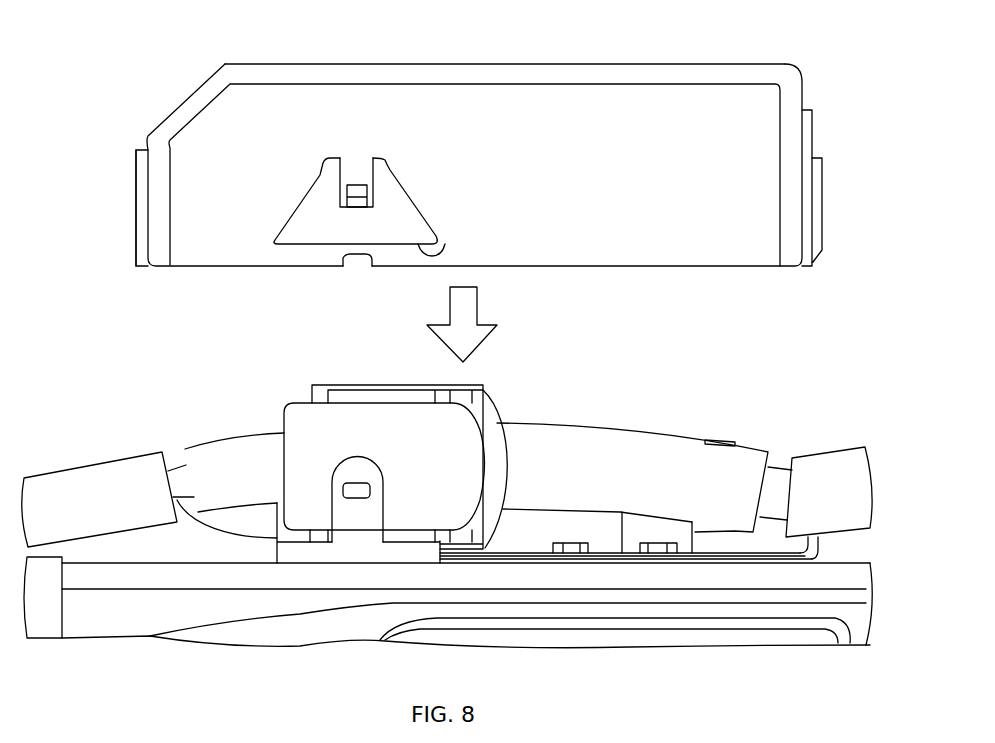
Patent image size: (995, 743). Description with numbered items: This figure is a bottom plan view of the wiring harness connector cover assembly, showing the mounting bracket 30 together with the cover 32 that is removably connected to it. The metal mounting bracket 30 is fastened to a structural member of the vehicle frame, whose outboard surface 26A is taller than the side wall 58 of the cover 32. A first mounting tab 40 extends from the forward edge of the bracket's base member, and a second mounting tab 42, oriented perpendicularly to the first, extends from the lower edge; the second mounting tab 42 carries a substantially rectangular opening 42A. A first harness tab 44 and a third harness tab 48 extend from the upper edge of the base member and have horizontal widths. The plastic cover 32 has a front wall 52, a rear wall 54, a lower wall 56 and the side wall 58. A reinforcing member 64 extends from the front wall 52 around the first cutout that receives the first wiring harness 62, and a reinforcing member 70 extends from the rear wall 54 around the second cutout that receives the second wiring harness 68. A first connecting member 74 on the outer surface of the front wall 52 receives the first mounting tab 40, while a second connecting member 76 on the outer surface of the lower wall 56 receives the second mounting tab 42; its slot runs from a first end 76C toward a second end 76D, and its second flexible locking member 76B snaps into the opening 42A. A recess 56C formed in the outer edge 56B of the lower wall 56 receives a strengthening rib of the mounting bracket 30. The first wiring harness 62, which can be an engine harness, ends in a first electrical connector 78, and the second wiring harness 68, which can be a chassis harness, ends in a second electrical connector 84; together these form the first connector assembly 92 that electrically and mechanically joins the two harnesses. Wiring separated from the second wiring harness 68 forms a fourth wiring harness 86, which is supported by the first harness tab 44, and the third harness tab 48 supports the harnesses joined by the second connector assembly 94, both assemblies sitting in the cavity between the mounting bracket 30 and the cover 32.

The cover 32 is at (272, 58).
The side wall 58 is at (512, 63).
The lower wall 56 is at (592, 120).
The outer edge of the lower wall 56B is at (668, 268).
The recess 56C is at (357, 267).
The front wall 52 is at (802, 95).
The rear wall 54 is at (136, 176).
The reinforcing member 70 is at (136, 215).
The reinforcing member 64 is at (812, 129).
The first connecting member 74 is at (822, 212).
The second connecting member 76 is at (408, 198).
The second flexible locking member 76B is at (352, 185).
The first end of the second connecting member 76C is at (445, 244).
The second end of the second connecting member 76D is at (380, 160).
The second wiring harness 68 is at (48, 478).
The first wiring harness 62 is at (826, 456).
The second connector assembly 94 is at (720, 428).
The first connector assembly 92 is at (357, 378).
The second electrical connector 84 is at (293, 403).
The first electrical connector 78 is at (498, 408).
The second mounting tab 42 is at (383, 503).
The opening 42A is at (350, 483).
The first harness tab 44 is at (280, 527).
The fourth wiring harness 86 is at (217, 527).
The mounting bracket 30 is at (524, 542).
The first mounting tab 40 is at (820, 549).
The third harness tab 48 is at (620, 534).
The outboard surface of the structural member 26A is at (137, 562).